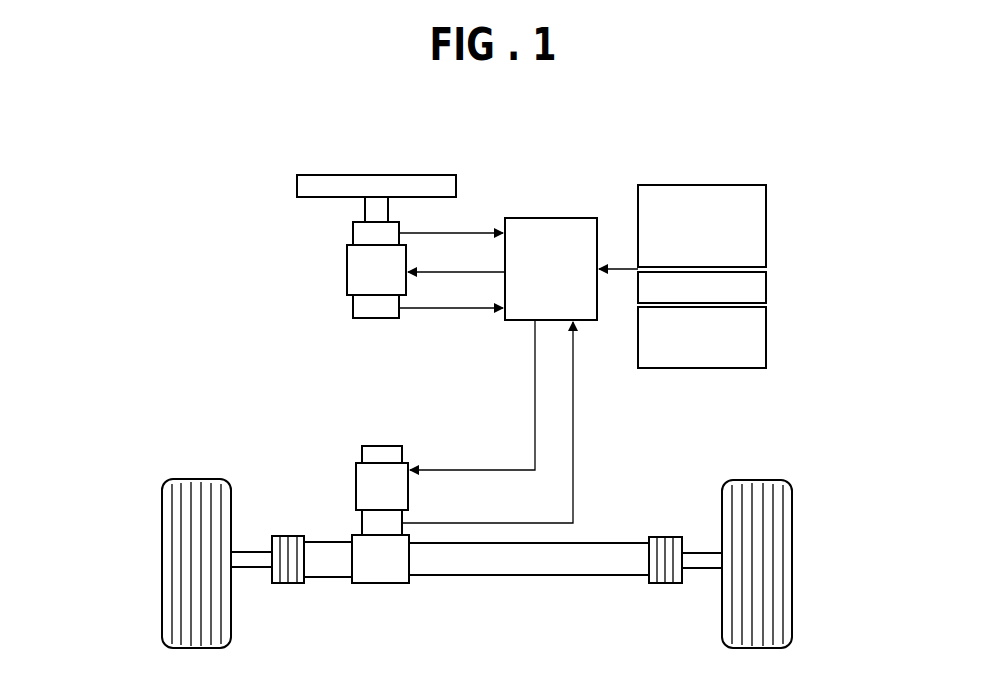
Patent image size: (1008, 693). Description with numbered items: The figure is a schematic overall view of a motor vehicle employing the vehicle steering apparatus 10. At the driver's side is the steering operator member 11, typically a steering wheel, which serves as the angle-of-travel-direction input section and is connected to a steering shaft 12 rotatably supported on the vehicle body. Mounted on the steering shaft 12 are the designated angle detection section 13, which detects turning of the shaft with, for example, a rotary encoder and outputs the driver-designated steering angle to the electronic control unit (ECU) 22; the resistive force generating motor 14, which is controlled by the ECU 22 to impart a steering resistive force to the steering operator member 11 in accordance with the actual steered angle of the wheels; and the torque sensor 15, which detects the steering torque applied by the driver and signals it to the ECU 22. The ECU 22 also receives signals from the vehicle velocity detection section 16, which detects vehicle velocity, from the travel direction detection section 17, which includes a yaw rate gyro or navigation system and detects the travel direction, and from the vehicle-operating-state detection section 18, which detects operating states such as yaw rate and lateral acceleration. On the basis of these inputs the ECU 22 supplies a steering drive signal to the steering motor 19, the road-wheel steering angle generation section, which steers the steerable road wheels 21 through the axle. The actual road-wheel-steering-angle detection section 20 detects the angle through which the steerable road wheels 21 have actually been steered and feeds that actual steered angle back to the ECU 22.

The vehicle steering apparatus 10 is at (172, 261).
The steering operator member 11 is at (297, 185).
The steering shaft 12 is at (384, 210).
The designated angle detection section 13 is at (353, 233).
The resistive force generating motor 14 is at (347, 272).
The torque sensor 15 is at (353, 305).
The vehicle velocity detection section 16 is at (766, 287).
The travel direction detection section 17 is at (766, 335).
The vehicle-operating-state detection section 18 is at (766, 228).
The steering motor 19 is at (356, 485).
The actual road-wheel-steering-angle detection section 20 is at (385, 527).
The steerable road wheels 21 is at (175, 615).
The electronic control unit (ECU) 22 is at (550, 218).